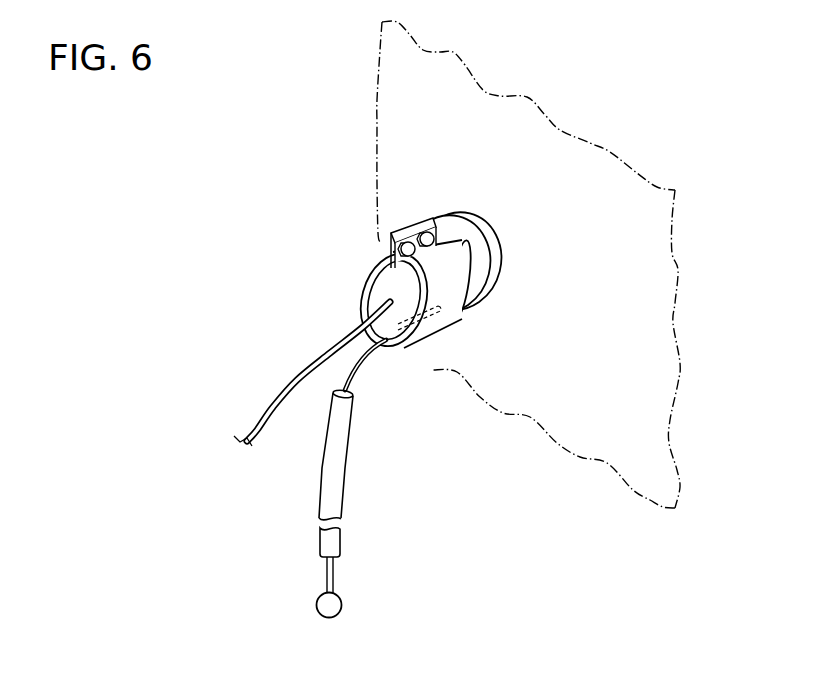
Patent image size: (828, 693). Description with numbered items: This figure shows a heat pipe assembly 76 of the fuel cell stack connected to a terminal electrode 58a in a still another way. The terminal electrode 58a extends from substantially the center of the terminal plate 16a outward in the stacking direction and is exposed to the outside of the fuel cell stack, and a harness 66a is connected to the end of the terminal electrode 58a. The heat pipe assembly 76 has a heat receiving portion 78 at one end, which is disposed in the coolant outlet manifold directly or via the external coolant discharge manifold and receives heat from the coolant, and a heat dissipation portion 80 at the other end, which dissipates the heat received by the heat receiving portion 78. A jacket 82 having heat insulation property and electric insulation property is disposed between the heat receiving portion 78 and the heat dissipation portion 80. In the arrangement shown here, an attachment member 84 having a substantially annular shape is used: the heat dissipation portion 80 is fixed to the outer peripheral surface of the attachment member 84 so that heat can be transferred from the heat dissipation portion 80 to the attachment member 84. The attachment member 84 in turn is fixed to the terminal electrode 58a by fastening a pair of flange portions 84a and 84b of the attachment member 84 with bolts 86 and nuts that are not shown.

The terminal plate 16a is at (578, 445).
The terminal electrode 58a is at (378, 287).
The harness 66a is at (293, 376).
The heat pipe assembly 76 is at (331, 504).
The heat receiving portion 78 is at (337, 605).
The heat dissipation portion 80 is at (377, 352).
The jacket 82 is at (343, 490).
The attachment member 84 is at (388, 298).
The flange portion 84a is at (418, 224).
The flange portion 84b is at (391, 238).
The bolts 86 is at (437, 247).